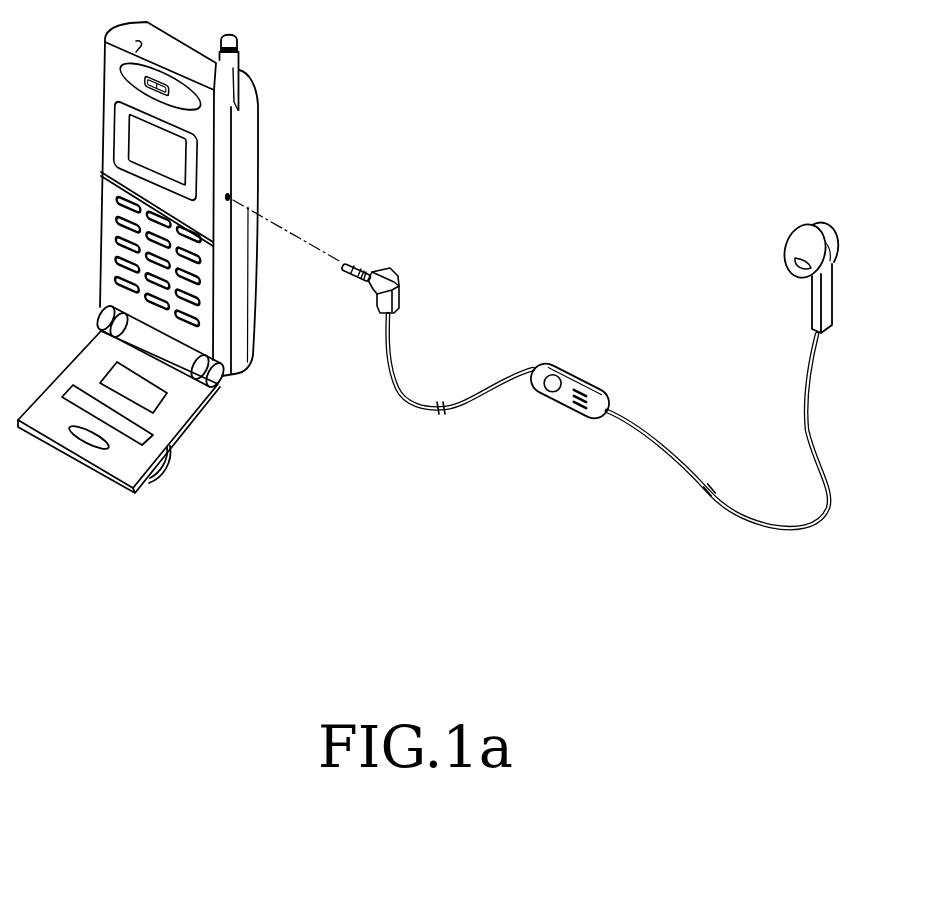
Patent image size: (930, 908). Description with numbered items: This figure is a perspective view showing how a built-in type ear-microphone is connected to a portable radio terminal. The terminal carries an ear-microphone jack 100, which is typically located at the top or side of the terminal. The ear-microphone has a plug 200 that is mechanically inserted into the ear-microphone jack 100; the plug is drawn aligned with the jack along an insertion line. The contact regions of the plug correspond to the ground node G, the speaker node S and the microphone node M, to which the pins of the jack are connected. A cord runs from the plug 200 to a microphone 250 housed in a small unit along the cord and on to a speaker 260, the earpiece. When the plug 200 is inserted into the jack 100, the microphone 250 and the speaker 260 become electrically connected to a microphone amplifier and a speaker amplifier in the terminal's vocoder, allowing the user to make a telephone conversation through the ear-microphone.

The ear-microphone jack 100 is at (233, 196).
The plug 200 is at (367, 259).
The microphone node M is at (343, 268).
The speaker node S is at (356, 274).
The ground node G is at (369, 279).
The microphone 250 is at (574, 369).
The speaker 260 is at (796, 237).